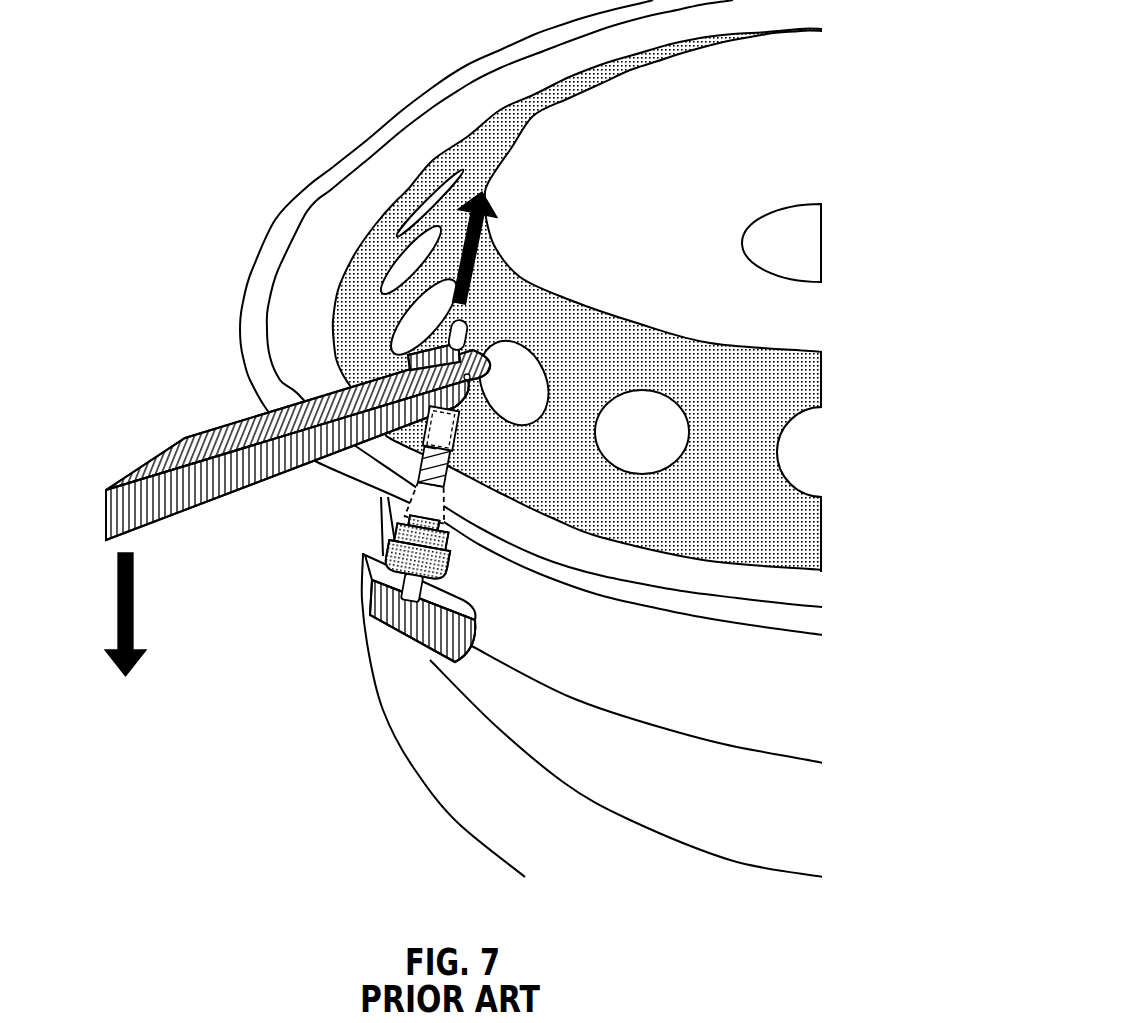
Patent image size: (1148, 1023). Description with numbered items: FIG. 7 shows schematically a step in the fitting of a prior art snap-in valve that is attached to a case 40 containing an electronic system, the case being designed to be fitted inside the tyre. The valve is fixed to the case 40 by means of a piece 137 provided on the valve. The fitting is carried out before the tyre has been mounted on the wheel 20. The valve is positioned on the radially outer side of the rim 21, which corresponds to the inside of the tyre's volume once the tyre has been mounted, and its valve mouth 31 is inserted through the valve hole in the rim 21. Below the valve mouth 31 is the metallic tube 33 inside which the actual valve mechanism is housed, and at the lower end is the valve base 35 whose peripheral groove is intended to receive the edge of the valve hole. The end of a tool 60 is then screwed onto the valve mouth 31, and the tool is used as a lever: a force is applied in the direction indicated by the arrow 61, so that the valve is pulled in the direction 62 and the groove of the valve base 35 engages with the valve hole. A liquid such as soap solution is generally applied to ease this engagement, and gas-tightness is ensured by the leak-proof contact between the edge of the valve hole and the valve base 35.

The wheel 20 is at (290, 97).
The rim 21 is at (374, 781).
The valve mouth 31 is at (445, 437).
The metallic tube 33 is at (445, 468).
The valve base 35 is at (383, 522).
The case 40 is at (371, 598).
The tool 60 is at (207, 433).
The arrow 61 is at (138, 602).
The direction 62 is at (484, 226).
The piece 137 is at (425, 588).